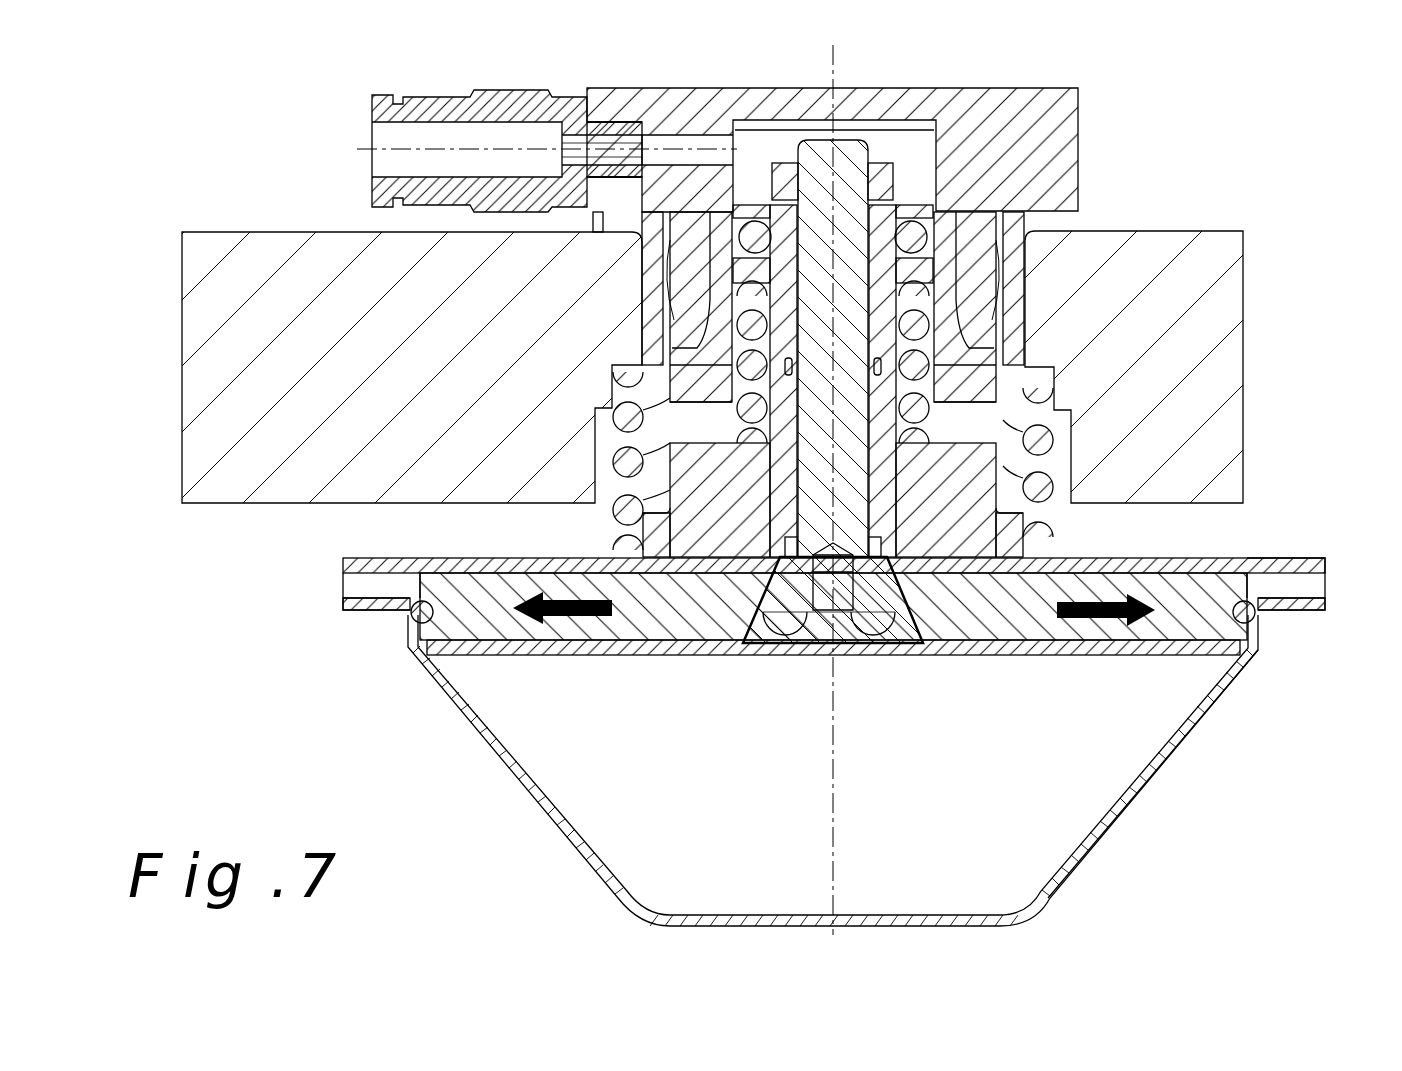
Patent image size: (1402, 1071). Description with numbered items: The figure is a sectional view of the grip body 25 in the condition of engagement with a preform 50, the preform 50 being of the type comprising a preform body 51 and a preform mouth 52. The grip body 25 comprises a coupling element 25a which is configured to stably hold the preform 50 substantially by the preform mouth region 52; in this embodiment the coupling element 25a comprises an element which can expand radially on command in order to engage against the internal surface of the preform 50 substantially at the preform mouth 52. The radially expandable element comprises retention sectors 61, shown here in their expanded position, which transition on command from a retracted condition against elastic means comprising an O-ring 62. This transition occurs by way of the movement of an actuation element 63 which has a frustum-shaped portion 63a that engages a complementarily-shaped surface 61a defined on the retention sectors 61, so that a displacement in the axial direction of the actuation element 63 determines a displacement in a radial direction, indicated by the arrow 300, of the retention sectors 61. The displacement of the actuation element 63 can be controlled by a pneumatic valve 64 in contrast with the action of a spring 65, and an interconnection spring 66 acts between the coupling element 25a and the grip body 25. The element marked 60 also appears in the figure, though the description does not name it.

The grip body 25 is at (178, 150).
The coupling element 25a is at (1295, 548).
The preform 50 is at (1192, 778).
The preform body 51 is at (1097, 850).
The preform mouth 52 is at (1260, 632).
The clamping head 60 is at (1093, 585).
The retention sectors 61 is at (660, 603).
The complementarily-shaped surface 61a is at (762, 640).
The O-ring 62 is at (408, 612).
The actuation element 63 is at (805, 603).
The frustum-shaped portion 63a is at (928, 600).
The pneumatic valve 64 is at (633, 128).
The spring 65 is at (905, 340).
The interconnection spring 66 is at (615, 465).
The arrow 300 is at (560, 605).